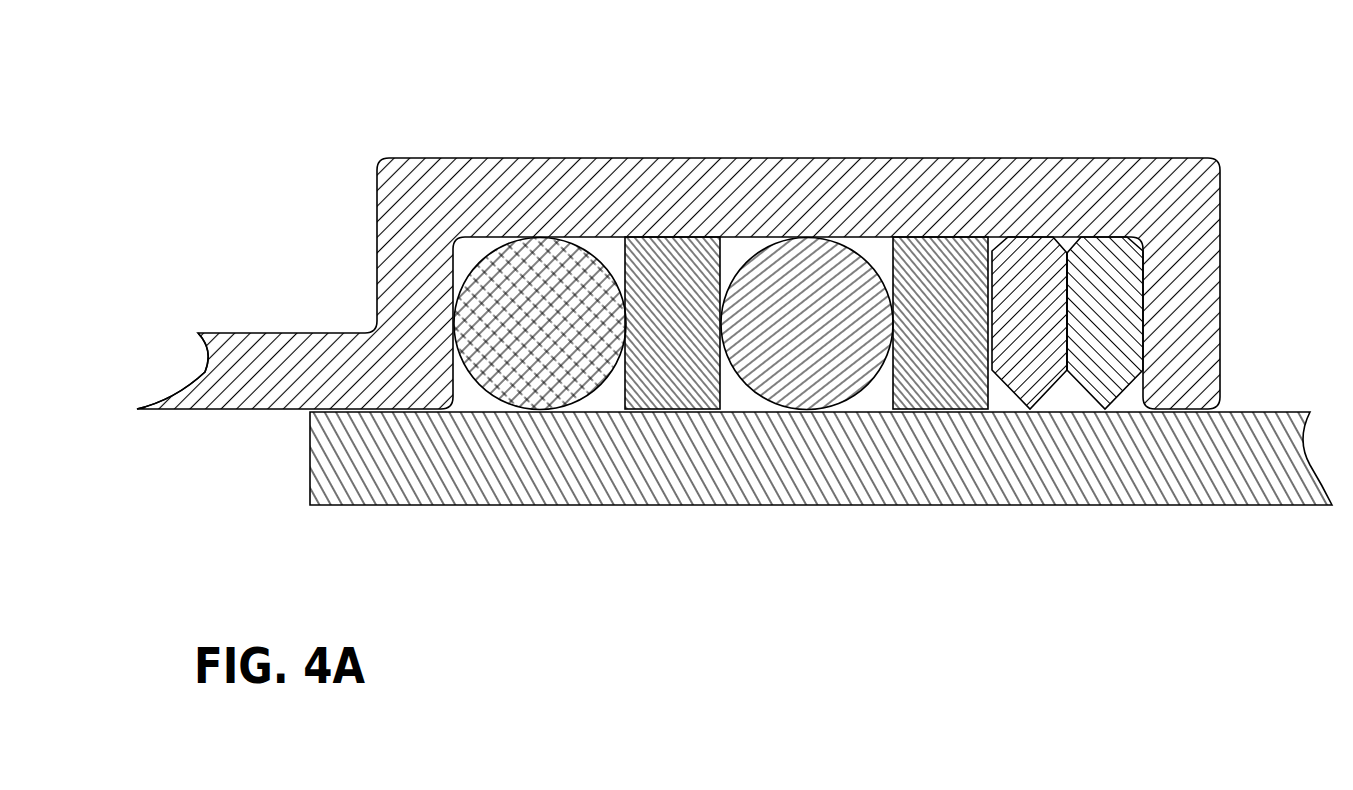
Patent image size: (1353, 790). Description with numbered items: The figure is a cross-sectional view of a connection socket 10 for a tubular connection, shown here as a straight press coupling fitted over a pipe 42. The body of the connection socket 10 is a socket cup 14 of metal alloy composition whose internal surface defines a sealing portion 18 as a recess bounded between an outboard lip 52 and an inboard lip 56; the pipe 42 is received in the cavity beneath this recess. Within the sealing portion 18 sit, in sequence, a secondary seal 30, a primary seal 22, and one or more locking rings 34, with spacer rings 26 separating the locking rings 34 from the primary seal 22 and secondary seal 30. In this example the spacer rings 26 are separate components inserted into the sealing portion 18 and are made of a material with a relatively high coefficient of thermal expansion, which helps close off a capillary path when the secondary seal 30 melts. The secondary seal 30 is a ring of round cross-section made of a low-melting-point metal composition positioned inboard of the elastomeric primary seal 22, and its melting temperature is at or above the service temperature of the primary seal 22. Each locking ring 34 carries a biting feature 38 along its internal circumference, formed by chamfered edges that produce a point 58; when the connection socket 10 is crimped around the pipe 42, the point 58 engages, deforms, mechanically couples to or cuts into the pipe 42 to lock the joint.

The connection socket 10 is at (1237, 146).
The socket cup 14 is at (253, 328).
The sealing portion 18 is at (865, 195).
The primary seal 22 is at (829, 270).
The spacer rings 26 is at (678, 285).
The secondary seal 30 is at (512, 280).
The locking rings 34 is at (1053, 255).
The biting feature 38 is at (1062, 396).
The pipe 42 is at (1265, 445).
The outboard lip 52 is at (1182, 290).
The inboard lip 56 is at (402, 280).
The point 58 is at (1030, 412).